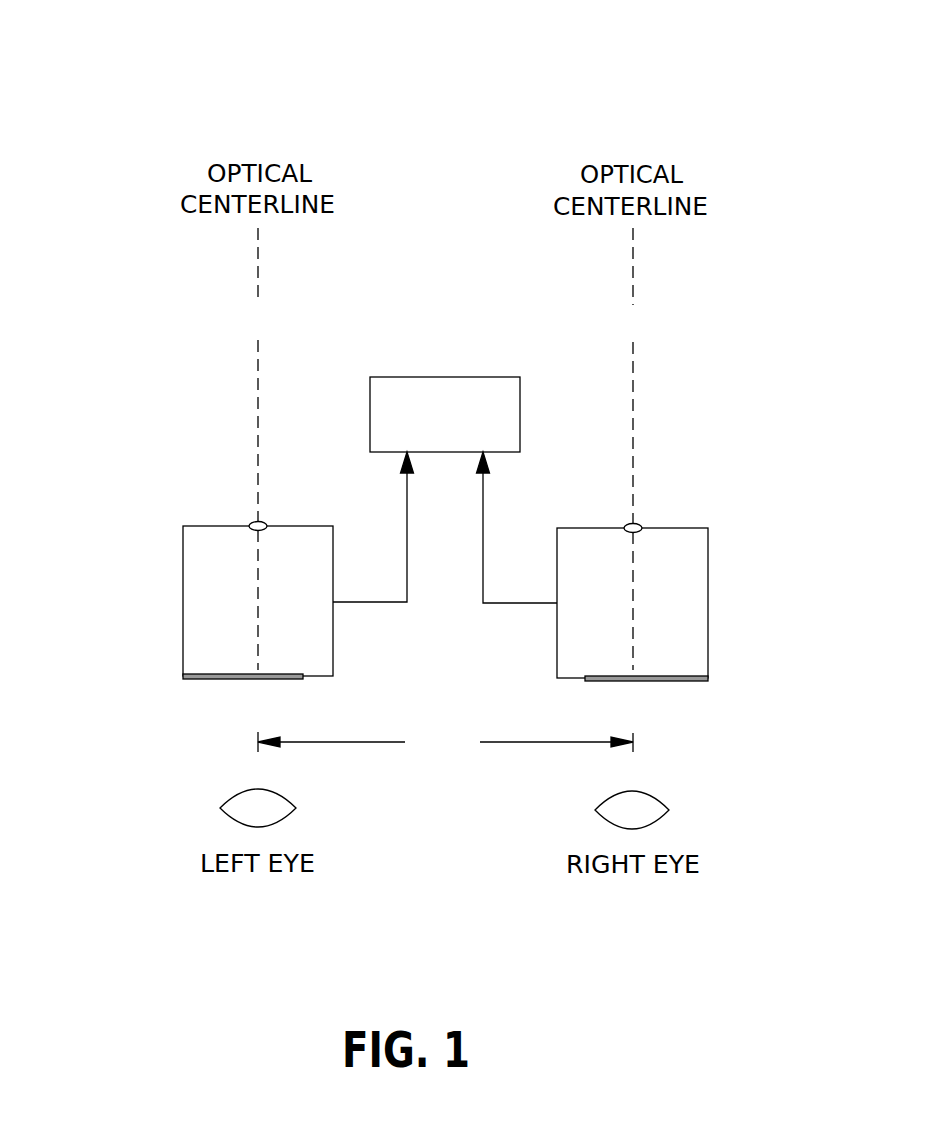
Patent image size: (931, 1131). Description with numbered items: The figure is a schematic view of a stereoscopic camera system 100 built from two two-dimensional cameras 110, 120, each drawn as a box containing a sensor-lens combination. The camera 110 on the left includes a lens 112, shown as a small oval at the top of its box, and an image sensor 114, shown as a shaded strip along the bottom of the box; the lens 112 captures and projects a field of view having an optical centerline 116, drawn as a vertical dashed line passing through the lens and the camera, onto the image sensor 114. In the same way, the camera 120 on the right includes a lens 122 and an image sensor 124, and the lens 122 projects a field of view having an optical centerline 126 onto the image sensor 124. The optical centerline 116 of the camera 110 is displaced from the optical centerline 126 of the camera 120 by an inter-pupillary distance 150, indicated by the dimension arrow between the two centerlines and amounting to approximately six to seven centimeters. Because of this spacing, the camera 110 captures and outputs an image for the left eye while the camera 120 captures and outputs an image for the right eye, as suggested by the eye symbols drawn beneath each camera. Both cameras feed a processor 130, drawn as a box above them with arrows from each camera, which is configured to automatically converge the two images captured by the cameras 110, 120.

The stereoscopic camera system 100 is at (525, 73).
The 2-D camera 110 is at (313, 624).
The lens 112 is at (208, 500).
The image sensor 114 is at (205, 700).
The optical centerline 116 is at (278, 332).
The 2-D camera 120 is at (612, 625).
The lens 122 is at (682, 502).
The image sensor 124 is at (684, 703).
The optical centerline 126 is at (652, 336).
The processor 130 is at (465, 427).
The inter-pupillary distance 150 is at (445, 742).